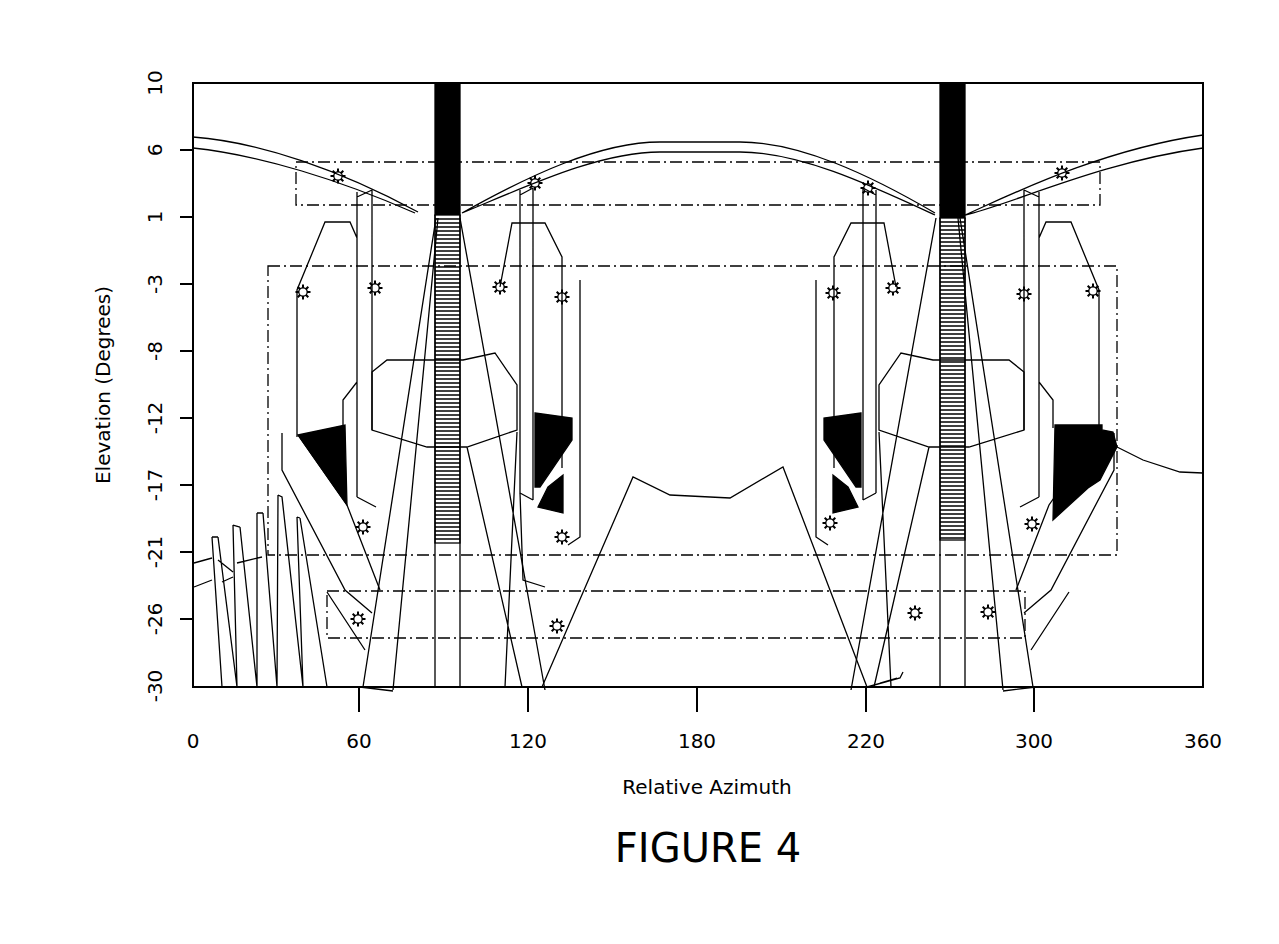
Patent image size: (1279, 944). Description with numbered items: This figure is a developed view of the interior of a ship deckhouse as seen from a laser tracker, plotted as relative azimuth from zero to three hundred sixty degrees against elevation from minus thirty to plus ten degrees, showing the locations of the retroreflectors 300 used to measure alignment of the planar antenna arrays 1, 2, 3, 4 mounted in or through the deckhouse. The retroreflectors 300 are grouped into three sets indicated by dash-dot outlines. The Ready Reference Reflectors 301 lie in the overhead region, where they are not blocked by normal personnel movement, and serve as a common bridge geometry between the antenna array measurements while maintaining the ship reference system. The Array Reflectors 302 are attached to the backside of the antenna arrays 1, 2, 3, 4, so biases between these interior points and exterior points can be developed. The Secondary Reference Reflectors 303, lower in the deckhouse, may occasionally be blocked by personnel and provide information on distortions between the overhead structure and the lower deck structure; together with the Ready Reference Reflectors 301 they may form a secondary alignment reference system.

The retroreflectors 300 is at (330, 180).
The Ready Reference Reflectors 301 is at (1008, 150).
The Array Reflectors 302 is at (1130, 366).
The Secondary Reference Reflectors 303 is at (1032, 612).
The antenna array 1 is at (413, 440).
The antenna array 2 is at (984, 440).
The antenna array 3 is at (856, 366).
The antenna array 4 is at (540, 366).